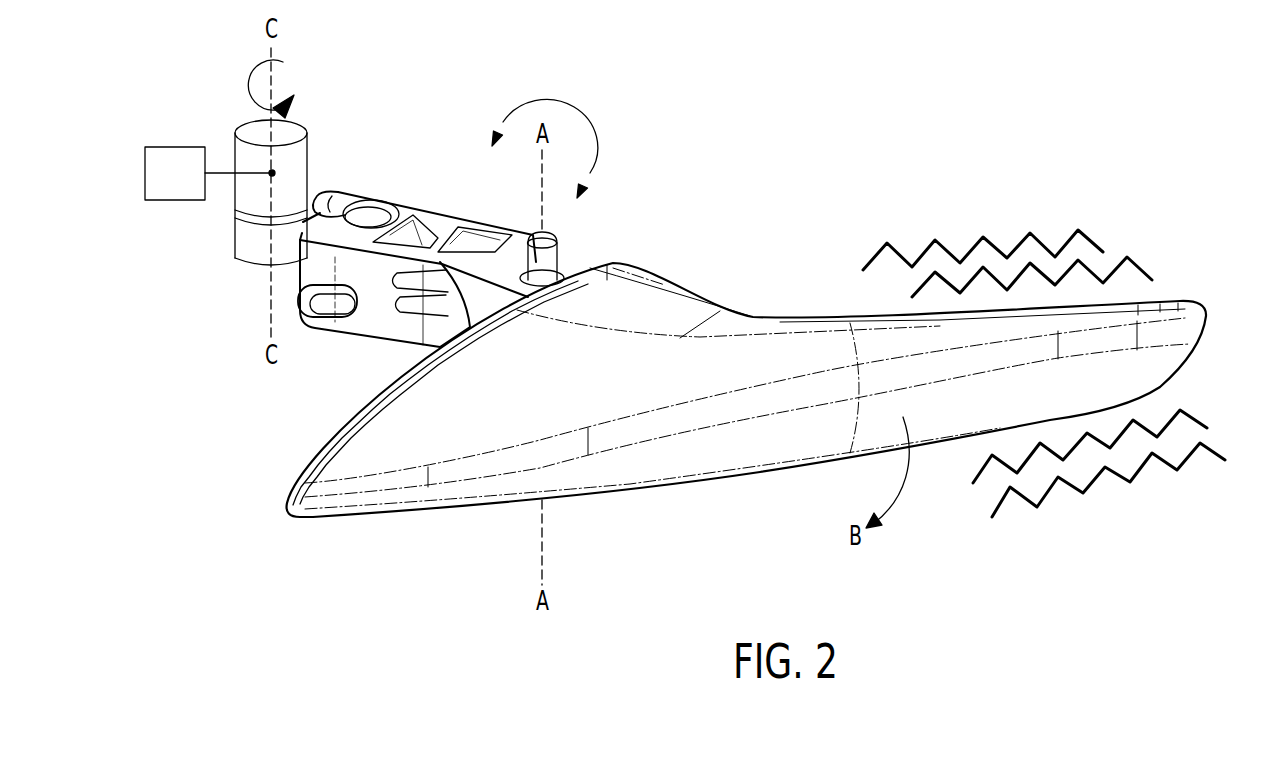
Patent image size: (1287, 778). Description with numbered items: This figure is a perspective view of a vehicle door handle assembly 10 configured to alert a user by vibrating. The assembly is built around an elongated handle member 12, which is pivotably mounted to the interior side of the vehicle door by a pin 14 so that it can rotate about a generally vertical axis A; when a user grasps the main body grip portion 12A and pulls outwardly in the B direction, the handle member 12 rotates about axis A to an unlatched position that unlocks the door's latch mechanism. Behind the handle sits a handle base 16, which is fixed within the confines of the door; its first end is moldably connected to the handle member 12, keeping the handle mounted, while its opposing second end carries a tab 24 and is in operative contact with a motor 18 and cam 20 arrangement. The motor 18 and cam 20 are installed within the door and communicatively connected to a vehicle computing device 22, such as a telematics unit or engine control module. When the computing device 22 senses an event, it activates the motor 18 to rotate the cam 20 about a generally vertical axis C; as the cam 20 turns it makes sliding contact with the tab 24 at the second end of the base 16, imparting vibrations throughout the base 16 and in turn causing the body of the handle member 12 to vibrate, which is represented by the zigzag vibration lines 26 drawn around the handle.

The handle assembly 10 is at (700, 226).
The handle member 12 is at (1207, 306).
The main body grip portion 12A is at (766, 462).
The pin 14 is at (553, 258).
The handle base 16 is at (410, 210).
The motor 18 is at (308, 157).
The cam 20 is at (238, 230).
The vehicle computing device 22 is at (172, 147).
The tab 24 is at (325, 196).
The vibration 26 is at (1126, 240).